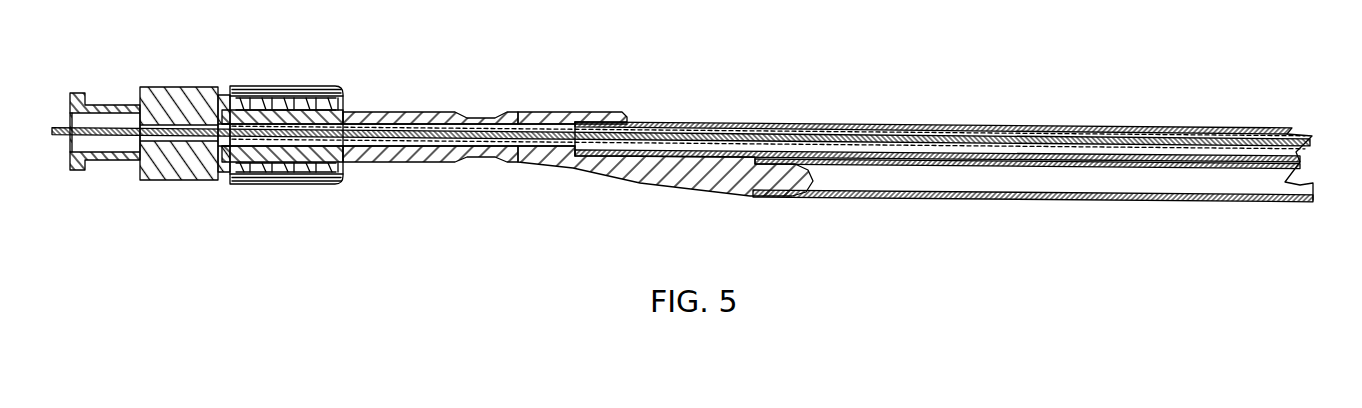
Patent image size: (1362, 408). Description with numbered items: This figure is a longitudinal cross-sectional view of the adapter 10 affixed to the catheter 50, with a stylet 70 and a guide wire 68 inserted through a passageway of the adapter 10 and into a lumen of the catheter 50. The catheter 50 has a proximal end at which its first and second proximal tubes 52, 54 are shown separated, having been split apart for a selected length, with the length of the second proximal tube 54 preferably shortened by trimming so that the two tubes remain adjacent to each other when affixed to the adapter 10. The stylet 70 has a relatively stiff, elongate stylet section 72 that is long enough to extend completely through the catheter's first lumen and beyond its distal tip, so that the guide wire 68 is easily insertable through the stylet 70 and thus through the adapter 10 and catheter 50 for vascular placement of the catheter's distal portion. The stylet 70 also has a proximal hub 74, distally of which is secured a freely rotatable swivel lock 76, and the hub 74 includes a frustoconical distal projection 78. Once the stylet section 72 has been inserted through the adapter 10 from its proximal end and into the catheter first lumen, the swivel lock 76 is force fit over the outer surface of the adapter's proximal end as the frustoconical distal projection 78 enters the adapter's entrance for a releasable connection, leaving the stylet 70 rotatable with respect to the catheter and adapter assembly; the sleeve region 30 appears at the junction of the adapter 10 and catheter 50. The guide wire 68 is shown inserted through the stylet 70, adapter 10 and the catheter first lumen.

The adapter 10 is at (570, 87).
The sleeve 30 is at (607, 184).
The catheter 50 is at (1052, 120).
The first proximal tube 52 is at (874, 118).
The second proximal tube 54 is at (902, 207).
The guide wire 68 is at (100, 144).
The stylet 70 is at (381, 150).
The stylet section 72 is at (453, 119).
The proximal hub 74 is at (188, 194).
The swivel lock 76 is at (274, 193).
The frustoconical distal projection 78 is at (320, 109).